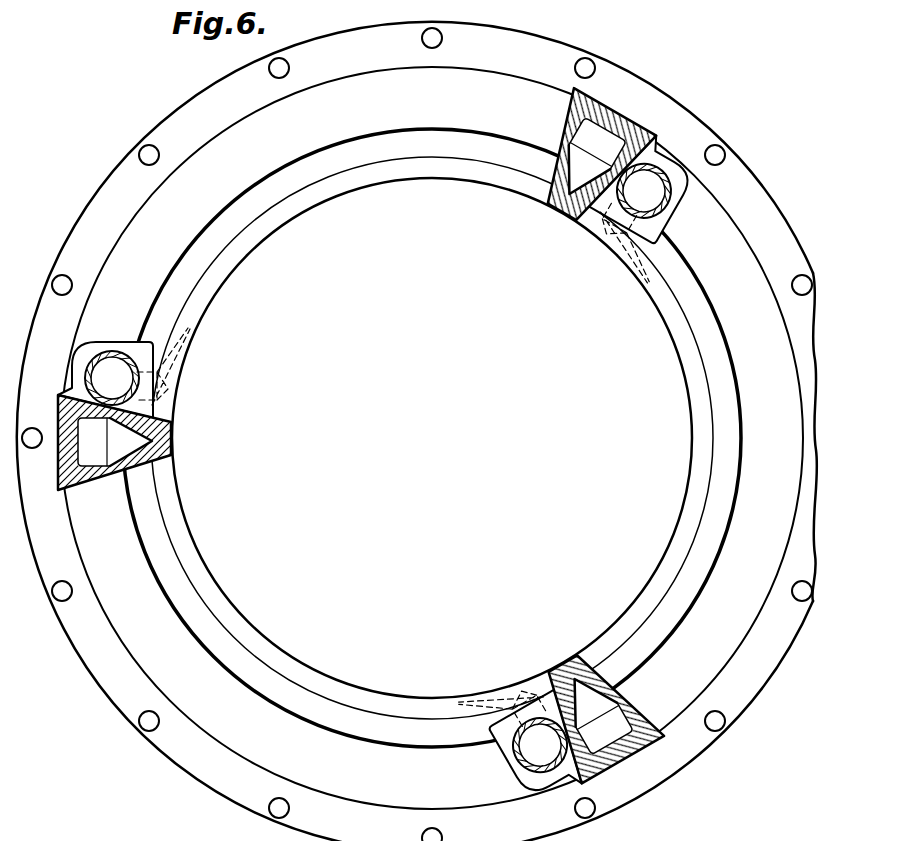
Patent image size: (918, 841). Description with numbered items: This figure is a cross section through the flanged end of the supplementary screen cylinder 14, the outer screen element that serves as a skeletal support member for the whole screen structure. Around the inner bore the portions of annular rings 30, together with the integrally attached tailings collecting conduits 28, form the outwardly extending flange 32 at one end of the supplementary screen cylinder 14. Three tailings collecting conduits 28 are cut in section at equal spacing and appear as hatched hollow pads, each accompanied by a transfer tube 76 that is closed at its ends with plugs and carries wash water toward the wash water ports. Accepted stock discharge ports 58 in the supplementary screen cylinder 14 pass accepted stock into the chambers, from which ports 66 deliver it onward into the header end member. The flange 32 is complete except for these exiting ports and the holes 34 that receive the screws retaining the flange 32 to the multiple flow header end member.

The supplementary screen cylinder 14 is at (267, 203).
The tailings collecting conduits 28 is at (100, 468).
The annular rings 30 is at (430, 128).
The flange 32 is at (72, 233).
The holes 34 is at (138, 157).
The accepted stock discharge ports 58 is at (362, 172).
The ports 66 is at (301, 190).
The transfer tubes 76 is at (111, 355).